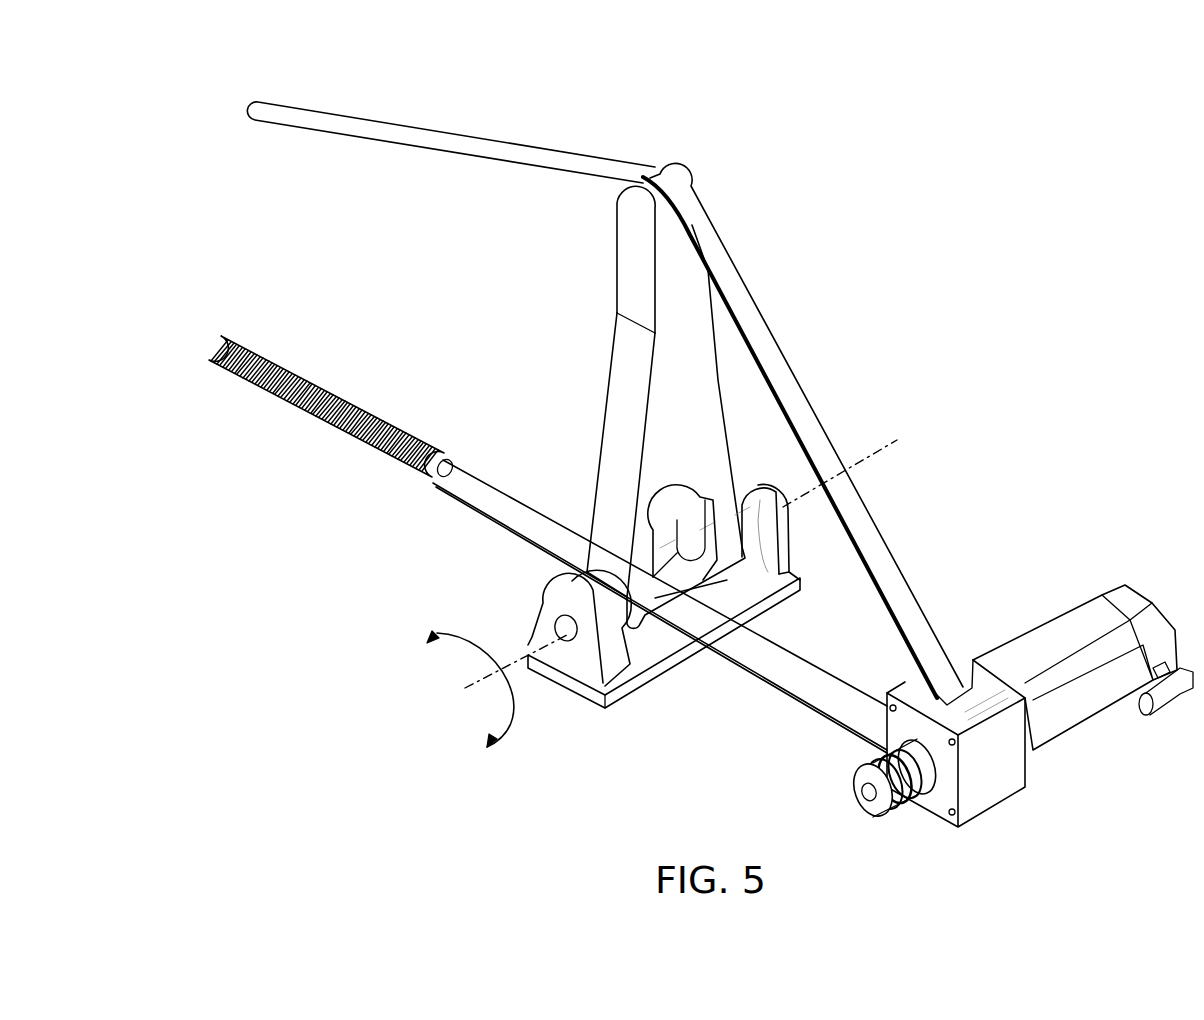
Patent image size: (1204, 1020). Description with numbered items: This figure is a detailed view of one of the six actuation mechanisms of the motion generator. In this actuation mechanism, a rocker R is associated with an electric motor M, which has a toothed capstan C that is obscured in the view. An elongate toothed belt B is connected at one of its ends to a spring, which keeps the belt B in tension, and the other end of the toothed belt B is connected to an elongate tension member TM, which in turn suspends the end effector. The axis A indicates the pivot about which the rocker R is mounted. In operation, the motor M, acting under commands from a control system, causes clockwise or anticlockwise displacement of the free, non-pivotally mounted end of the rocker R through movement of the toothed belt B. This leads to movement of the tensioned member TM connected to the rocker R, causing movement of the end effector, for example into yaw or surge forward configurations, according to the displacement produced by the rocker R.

The tension member TM is at (502, 137).
The rocker R is at (598, 348).
The toothed belt B is at (810, 388).
The axis of rotation A is at (673, 583).
The electric motor M is at (1060, 628).
The toothed capstan C is at (992, 787).